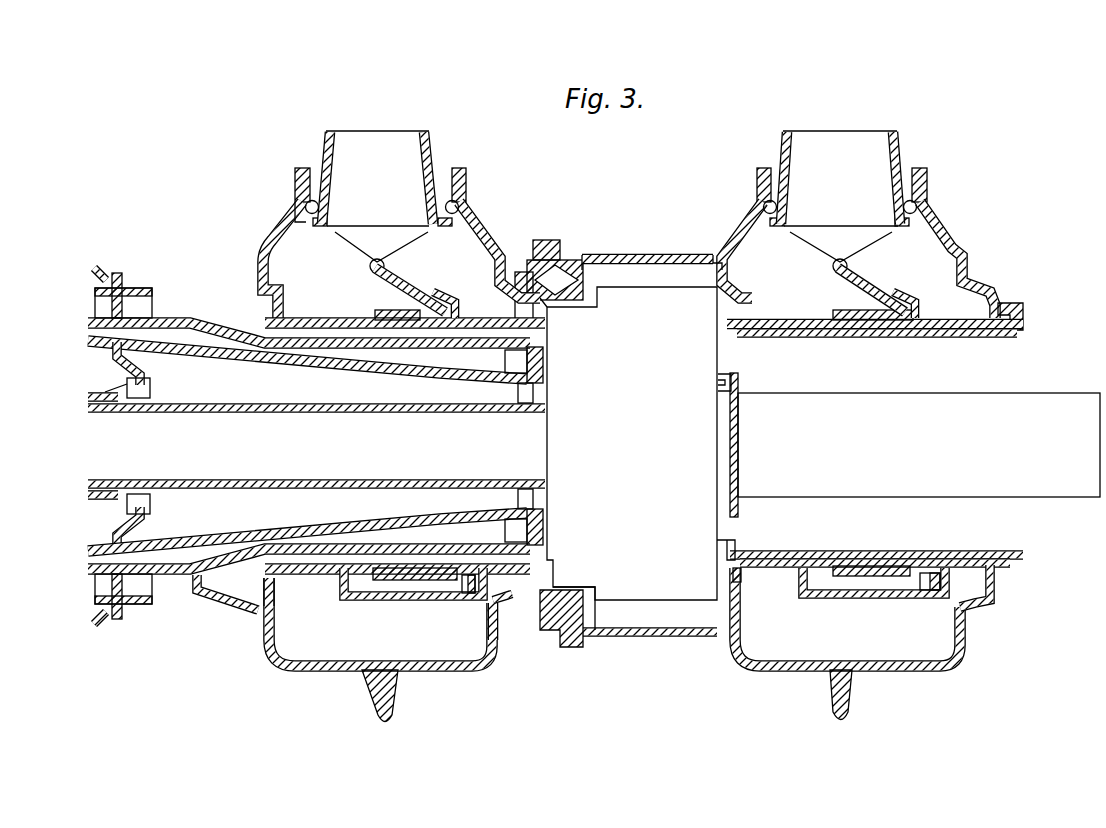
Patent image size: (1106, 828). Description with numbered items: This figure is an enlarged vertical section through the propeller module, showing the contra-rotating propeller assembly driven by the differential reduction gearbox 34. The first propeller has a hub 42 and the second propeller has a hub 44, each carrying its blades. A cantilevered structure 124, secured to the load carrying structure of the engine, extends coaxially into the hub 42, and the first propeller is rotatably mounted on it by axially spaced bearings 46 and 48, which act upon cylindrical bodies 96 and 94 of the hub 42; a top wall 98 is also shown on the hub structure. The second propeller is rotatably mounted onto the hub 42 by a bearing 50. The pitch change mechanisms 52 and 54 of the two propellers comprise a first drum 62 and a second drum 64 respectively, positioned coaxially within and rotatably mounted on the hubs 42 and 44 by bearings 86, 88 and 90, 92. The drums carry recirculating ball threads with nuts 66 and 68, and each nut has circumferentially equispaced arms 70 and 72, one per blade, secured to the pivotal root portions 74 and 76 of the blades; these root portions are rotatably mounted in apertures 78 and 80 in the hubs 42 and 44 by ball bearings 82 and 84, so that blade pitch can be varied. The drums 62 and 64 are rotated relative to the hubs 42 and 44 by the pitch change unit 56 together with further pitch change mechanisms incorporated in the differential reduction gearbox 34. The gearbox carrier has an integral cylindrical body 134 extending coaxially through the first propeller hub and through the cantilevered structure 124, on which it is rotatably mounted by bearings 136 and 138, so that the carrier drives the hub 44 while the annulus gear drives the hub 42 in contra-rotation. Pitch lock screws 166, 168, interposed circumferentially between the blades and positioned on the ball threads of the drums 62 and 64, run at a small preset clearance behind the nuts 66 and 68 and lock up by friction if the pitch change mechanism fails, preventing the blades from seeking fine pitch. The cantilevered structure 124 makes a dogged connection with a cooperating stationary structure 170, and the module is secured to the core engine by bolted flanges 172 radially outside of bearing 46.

The differential reduction gearbox 34 is at (610, 305).
The hub 42 is at (350, 668).
The hub 44 is at (763, 664).
The bearing 46 is at (110, 275).
The bearing 48 is at (523, 530).
The bearing 50 is at (567, 628).
The pitch change mechanism 52 is at (462, 260).
The pitch change mechanism 54 is at (920, 263).
The pitch change unit 56 is at (1042, 402).
The first drum 62 is at (340, 572).
The second drum 64 is at (798, 565).
The nut 66 is at (433, 583).
The nut 68 is at (903, 577).
The arms 70 is at (410, 285).
The arms 72 is at (827, 273).
The pivotal root portion 74 is at (347, 142).
The pivotal root portion 76 is at (797, 152).
The aperture 78 is at (303, 222).
The aperture 80 is at (898, 168).
The ball bearing 82 is at (313, 200).
The ball bearing 84 is at (770, 200).
The bearing 86 is at (267, 583).
The bearing 88 is at (488, 617).
The bearing 90 is at (735, 580).
The bearing 92 is at (983, 582).
The cylindrical body 94 is at (276, 550).
The cylindrical body 96 is at (208, 600).
The top wall 98 is at (673, 252).
The cantilevered structure 124 is at (264, 360).
The cylindrical body 134 is at (403, 413).
The bearing 136 is at (140, 400).
The bearing 138 is at (523, 398).
The pitch lock screw 166 is at (410, 600).
The pitch lock screw 168 is at (860, 598).
The stationary structure 170 is at (538, 367).
The bolted flanges 172 is at (100, 627).